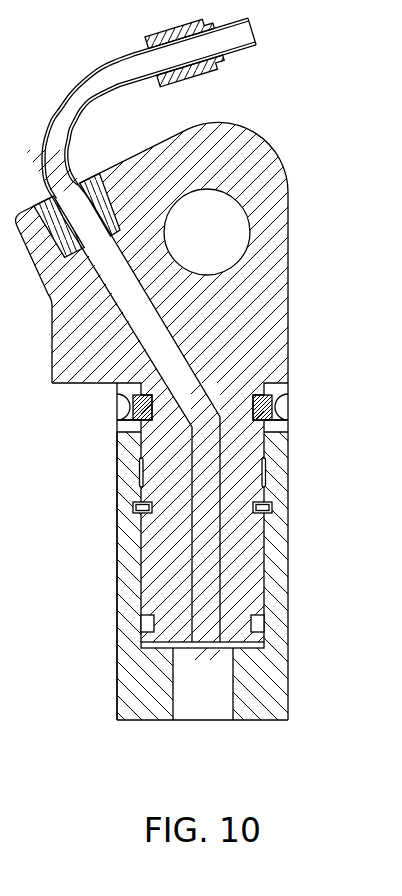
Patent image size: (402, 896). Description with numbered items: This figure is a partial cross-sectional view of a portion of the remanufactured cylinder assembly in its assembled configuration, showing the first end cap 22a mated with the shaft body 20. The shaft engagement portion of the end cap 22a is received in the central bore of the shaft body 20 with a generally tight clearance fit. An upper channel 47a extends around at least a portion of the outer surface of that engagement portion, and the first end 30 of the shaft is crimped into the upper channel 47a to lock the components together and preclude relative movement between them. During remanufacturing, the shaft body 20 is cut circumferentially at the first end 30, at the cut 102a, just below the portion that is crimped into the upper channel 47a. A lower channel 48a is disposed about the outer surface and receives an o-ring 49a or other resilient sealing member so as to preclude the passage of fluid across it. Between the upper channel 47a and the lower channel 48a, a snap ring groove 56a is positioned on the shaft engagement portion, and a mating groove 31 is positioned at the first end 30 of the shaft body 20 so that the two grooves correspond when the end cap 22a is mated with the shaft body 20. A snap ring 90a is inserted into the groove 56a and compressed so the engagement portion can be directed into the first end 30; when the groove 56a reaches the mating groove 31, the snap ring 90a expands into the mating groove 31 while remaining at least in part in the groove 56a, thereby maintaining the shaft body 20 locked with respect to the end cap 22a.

The shaft body 20 is at (115, 677).
The first end cap 22a is at (287, 263).
The first end 30 is at (115, 457).
The mating groove 31 is at (140, 514).
The upper channel 47a is at (262, 405).
The lower channel 48a is at (266, 645).
The o-ring 49a is at (264, 617).
The snap ring groove 56a is at (133, 508).
The snap ring 90a is at (273, 509).
The cut 102a is at (282, 430).